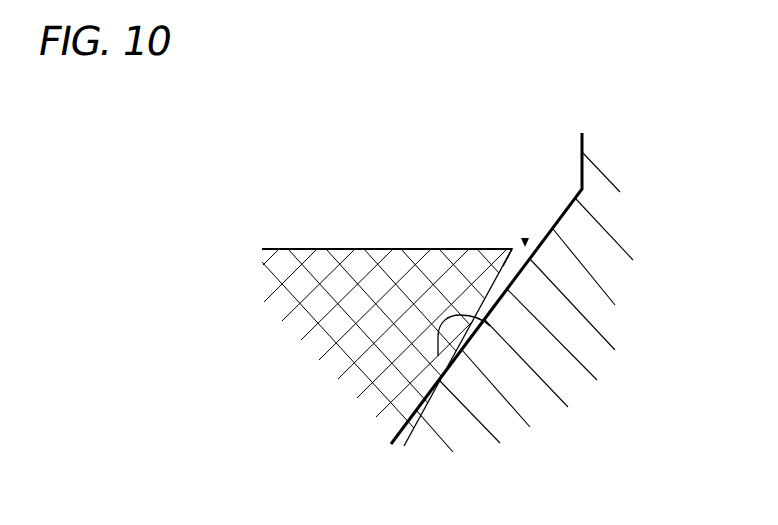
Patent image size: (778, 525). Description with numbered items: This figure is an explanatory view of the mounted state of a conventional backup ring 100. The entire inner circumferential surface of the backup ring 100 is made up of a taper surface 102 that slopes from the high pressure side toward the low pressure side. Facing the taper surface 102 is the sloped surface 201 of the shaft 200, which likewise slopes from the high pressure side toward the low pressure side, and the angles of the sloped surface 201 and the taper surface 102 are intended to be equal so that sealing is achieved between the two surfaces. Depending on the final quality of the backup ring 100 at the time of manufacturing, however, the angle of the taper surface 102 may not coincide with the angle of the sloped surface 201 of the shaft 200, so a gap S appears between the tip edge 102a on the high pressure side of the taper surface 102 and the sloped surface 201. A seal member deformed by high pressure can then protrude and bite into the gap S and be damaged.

The backup ring 100 is at (327, 241).
The taper surface 102 is at (520, 318).
The tip edge 102a is at (508, 247).
The gap S is at (525, 240).
The shaft 200 is at (573, 148).
The sloped surface 201 is at (441, 357).